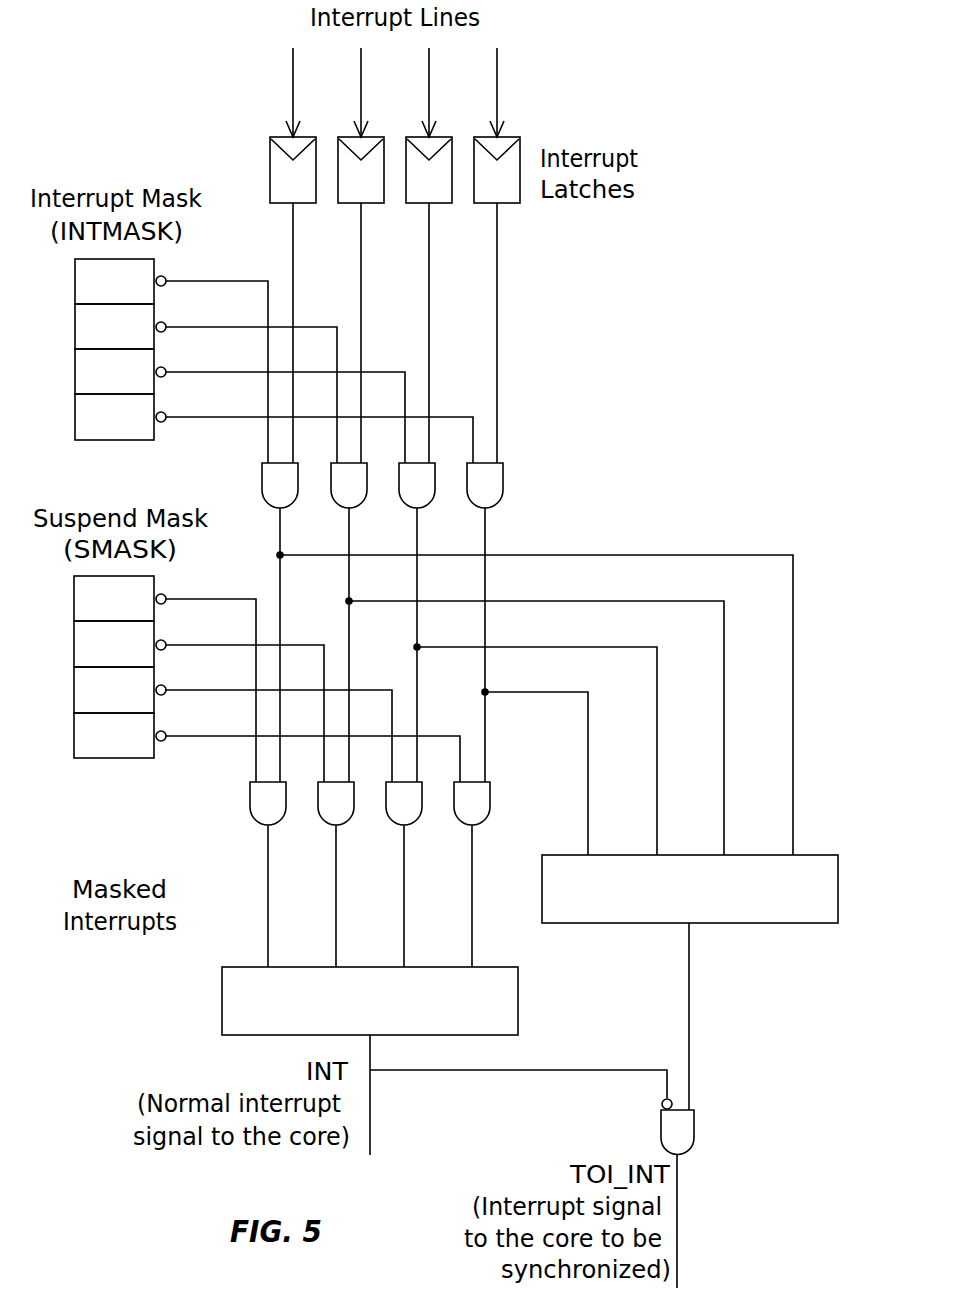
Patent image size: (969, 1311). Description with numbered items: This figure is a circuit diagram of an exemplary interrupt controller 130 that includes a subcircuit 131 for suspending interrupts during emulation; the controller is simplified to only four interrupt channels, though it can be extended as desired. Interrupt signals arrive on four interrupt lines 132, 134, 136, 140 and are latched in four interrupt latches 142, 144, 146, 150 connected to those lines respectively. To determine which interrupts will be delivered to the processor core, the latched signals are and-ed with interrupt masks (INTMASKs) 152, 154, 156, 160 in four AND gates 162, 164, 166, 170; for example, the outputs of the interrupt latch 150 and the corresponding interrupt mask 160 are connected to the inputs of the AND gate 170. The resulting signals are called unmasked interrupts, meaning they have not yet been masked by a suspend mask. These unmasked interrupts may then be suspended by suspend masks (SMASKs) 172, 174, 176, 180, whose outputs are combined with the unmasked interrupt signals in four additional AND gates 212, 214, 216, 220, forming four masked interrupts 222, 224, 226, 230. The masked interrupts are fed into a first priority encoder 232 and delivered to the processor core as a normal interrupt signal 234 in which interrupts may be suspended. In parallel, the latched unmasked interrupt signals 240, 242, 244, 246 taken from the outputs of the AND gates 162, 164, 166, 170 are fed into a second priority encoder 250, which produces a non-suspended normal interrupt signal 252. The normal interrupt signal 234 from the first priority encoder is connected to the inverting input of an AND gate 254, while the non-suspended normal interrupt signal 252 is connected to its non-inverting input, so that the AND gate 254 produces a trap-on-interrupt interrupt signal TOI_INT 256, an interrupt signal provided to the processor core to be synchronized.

The interrupt controller 130 is at (145, 123).
The subcircuit for suspending interrupts 131 is at (765, 535).
The interrupt line 132 is at (292, 83).
The interrupt line 134 is at (360, 83).
The interrupt line 136 is at (428, 83).
The interrupt line 140 is at (496, 83).
The interrupt latch 142 is at (269, 143).
The interrupt latch 144 is at (337, 143).
The interrupt latch 146 is at (405, 143).
The interrupt latch 150 is at (473, 143).
The interrupt mask (INTMASK) 152 is at (74, 428).
The interrupt mask (INTMASK) 154 is at (74, 383).
The interrupt mask (INTMASK) 156 is at (74, 338).
The interrupt mask (INTMASK) 160 is at (74, 293).
The AND gate 162 is at (261, 490).
The AND gate 164 is at (330, 490).
The AND gate 166 is at (398, 490).
The AND gate 170 is at (466, 490).
The suspend mask (SMASK) 172 is at (73, 748).
The suspend mask (SMASK) 174 is at (73, 703).
The suspend mask (SMASK) 176 is at (73, 658).
The suspend mask (SMASK) 180 is at (73, 612).
The AND gate 212 is at (249, 807).
The AND gate 214 is at (317, 807).
The AND gate 216 is at (385, 807).
The AND gate 220 is at (453, 807).
The masked interrupt 222 is at (267, 913).
The masked interrupt 224 is at (335, 913).
The masked interrupt 226 is at (403, 913).
The masked interrupt 230 is at (471, 913).
The priority encoder 232 is at (221, 995).
The normal interrupt signal 234 is at (372, 1115).
The latched unmasked interrupt signal 240 is at (587, 767).
The latched unmasked interrupt signal 242 is at (656, 767).
The latched unmasked interrupt signal 244 is at (723, 767).
The latched unmasked interrupt signal 246 is at (792, 767).
The priority encoder 250 is at (820, 856).
The non-suspended normal interrupt signal 252 is at (692, 1013).
The AND gate 254 is at (695, 1127).
The trap-on-interrupt interrupt signal TOI_INT 256 is at (678, 1240).